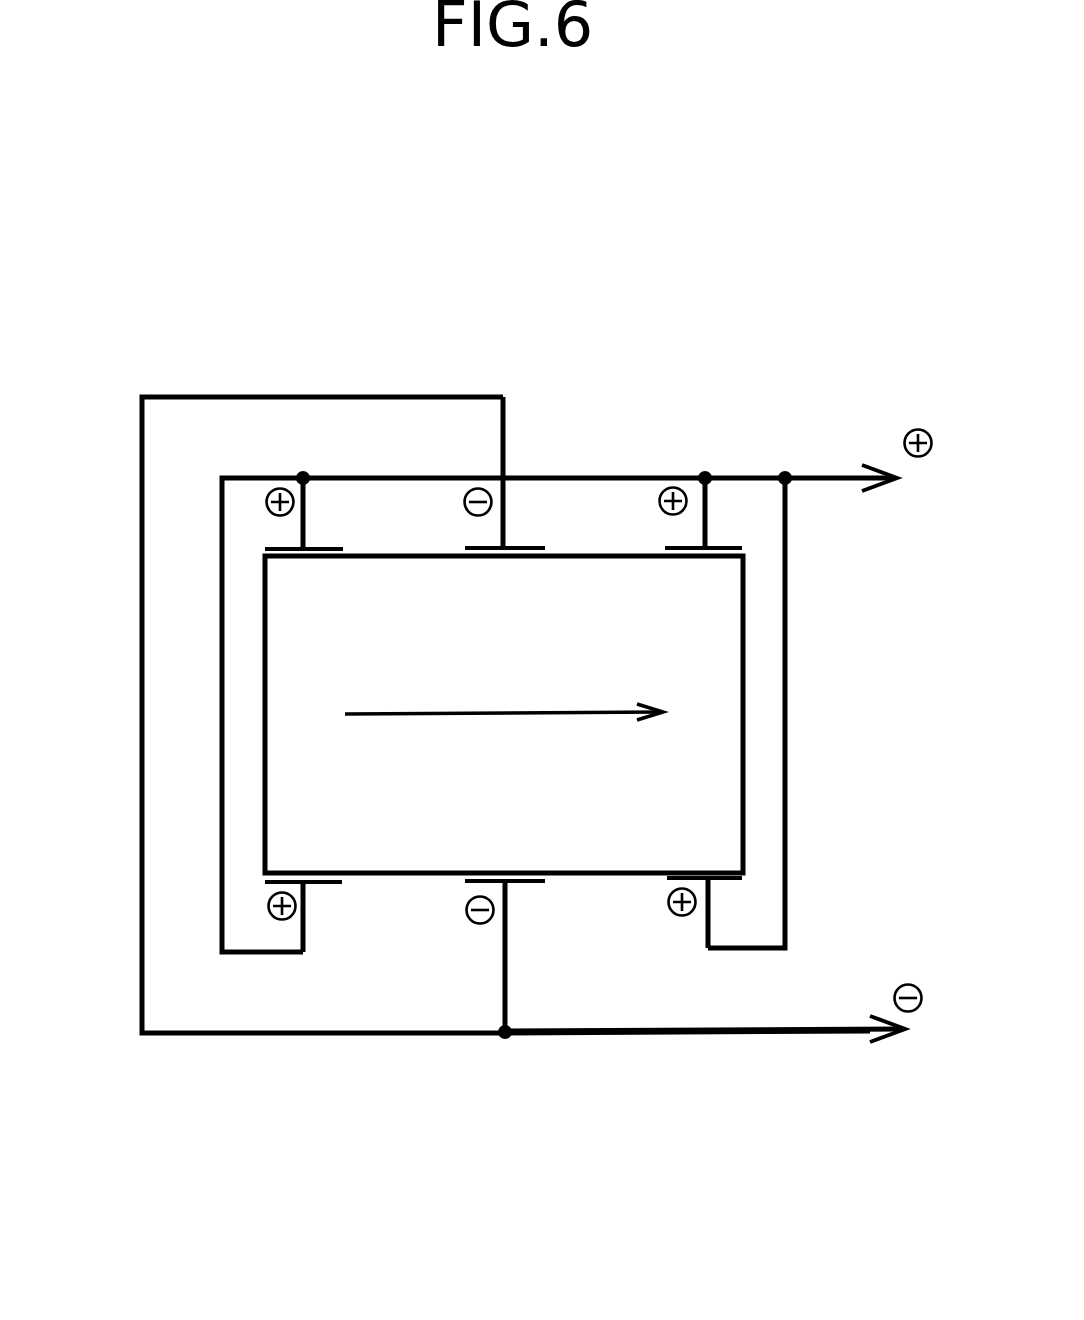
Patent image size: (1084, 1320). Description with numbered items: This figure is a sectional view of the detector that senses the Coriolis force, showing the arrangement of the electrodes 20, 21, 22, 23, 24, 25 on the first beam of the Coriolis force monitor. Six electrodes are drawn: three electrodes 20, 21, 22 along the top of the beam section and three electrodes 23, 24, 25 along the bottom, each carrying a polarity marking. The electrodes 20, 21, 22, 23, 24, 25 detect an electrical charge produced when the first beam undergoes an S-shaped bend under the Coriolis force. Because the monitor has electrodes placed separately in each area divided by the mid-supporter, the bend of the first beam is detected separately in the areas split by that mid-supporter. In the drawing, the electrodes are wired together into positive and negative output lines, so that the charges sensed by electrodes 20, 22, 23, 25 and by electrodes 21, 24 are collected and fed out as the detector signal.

The electrode 20 is at (320, 545).
The electrode 21 is at (518, 541).
The electrode 22 is at (718, 538).
The electrode 23 is at (322, 893).
The electrode 24 is at (520, 892).
The electrode 25 is at (723, 885).